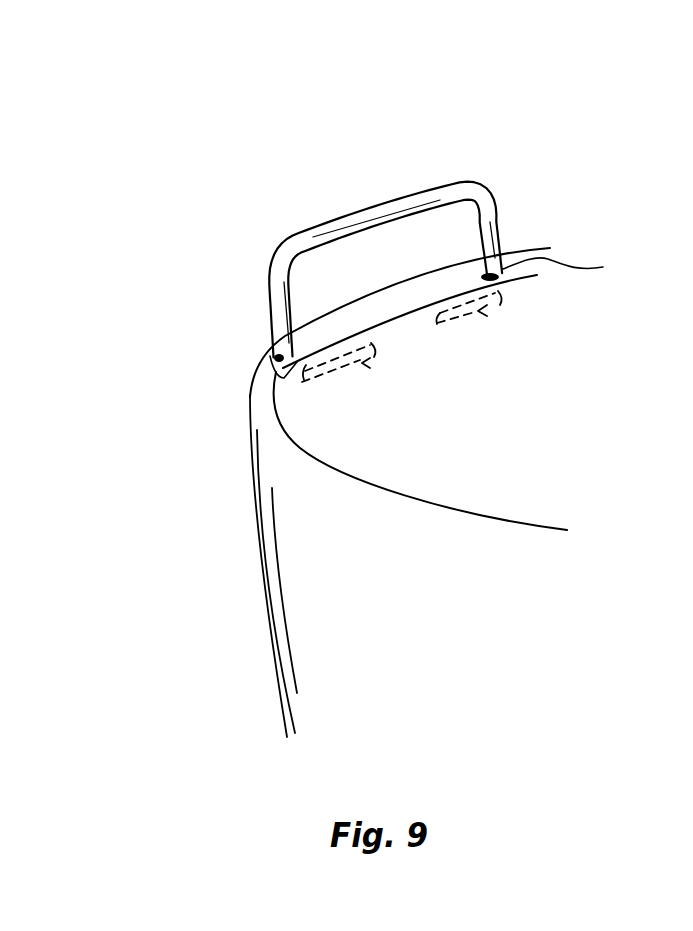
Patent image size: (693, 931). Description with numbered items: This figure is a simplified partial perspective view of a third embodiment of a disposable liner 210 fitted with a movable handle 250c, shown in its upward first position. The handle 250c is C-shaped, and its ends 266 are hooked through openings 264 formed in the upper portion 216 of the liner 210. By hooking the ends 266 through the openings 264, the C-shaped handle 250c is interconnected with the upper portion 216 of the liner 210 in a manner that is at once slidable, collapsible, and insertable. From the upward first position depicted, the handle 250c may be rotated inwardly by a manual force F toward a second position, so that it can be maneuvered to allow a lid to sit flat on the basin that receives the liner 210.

The liner 210 is at (345, 607).
The upper portion 216 is at (238, 393).
The movable handle 250c is at (350, 218).
The openings 264 is at (579, 262).
The ends 266 is at (372, 367).
The manual force F is at (243, 239).